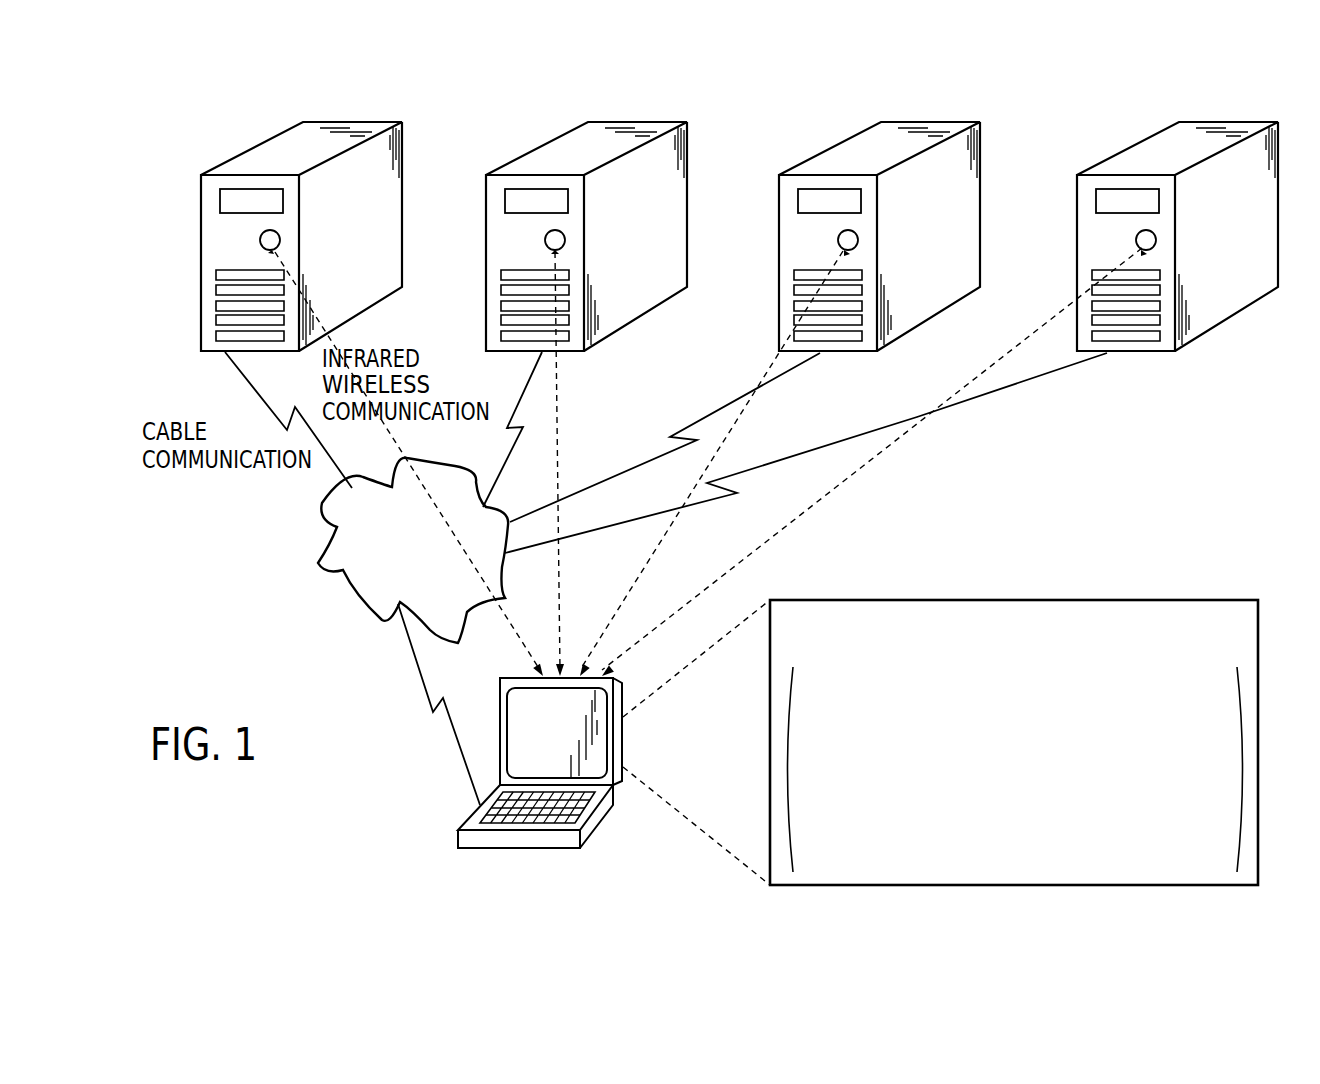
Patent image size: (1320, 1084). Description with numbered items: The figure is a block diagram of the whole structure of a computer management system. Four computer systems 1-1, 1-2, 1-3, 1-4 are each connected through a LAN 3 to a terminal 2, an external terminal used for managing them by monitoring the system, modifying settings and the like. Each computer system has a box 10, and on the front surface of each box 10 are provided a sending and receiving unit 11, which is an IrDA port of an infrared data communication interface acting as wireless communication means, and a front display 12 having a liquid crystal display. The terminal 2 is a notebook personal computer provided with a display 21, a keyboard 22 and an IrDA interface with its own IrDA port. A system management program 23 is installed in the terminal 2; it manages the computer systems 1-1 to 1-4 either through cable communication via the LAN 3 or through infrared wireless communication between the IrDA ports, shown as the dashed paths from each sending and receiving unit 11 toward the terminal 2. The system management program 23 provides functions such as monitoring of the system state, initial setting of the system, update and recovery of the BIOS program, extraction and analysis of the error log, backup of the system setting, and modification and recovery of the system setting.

The computer system 1-1 is at (237, 158).
The computer system 1-2 is at (522, 158).
The computer system 1-3 is at (815, 158).
The computer system 1-4 is at (1113, 158).
The box 10 is at (1087, 250).
The sending and receiving unit 11 is at (1189, 243).
The front display 12 is at (1189, 201).
The LAN 3 is at (349, 574).
The terminal 2 is at (451, 826).
The display 21 is at (513, 717).
The keyboard 22 is at (577, 807).
The system management program 23 is at (1203, 600).